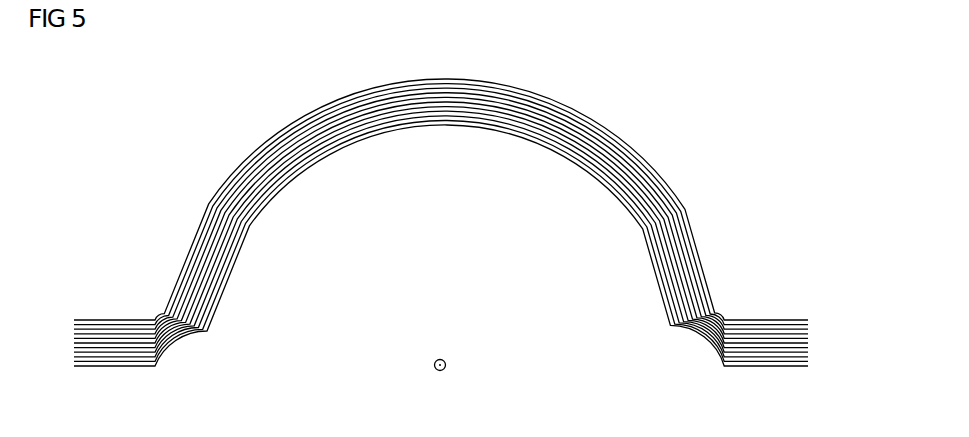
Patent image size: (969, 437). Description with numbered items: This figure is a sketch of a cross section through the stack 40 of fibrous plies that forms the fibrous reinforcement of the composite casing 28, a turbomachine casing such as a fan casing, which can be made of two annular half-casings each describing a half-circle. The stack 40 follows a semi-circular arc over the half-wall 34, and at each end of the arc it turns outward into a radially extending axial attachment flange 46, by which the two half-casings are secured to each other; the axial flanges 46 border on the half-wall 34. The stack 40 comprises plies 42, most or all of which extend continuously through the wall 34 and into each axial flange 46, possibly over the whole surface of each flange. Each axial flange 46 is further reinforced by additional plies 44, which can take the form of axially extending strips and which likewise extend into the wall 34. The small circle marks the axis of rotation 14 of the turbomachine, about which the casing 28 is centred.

The axis of rotation 14 is at (440, 358).
The composite casing 28 is at (666, 107).
The half-wall 34 is at (275, 110).
The stack 40 is at (468, 188).
The ply 42 is at (262, 180).
The additional plies 44 is at (207, 248).
The axial attachment flange 46 is at (107, 303).